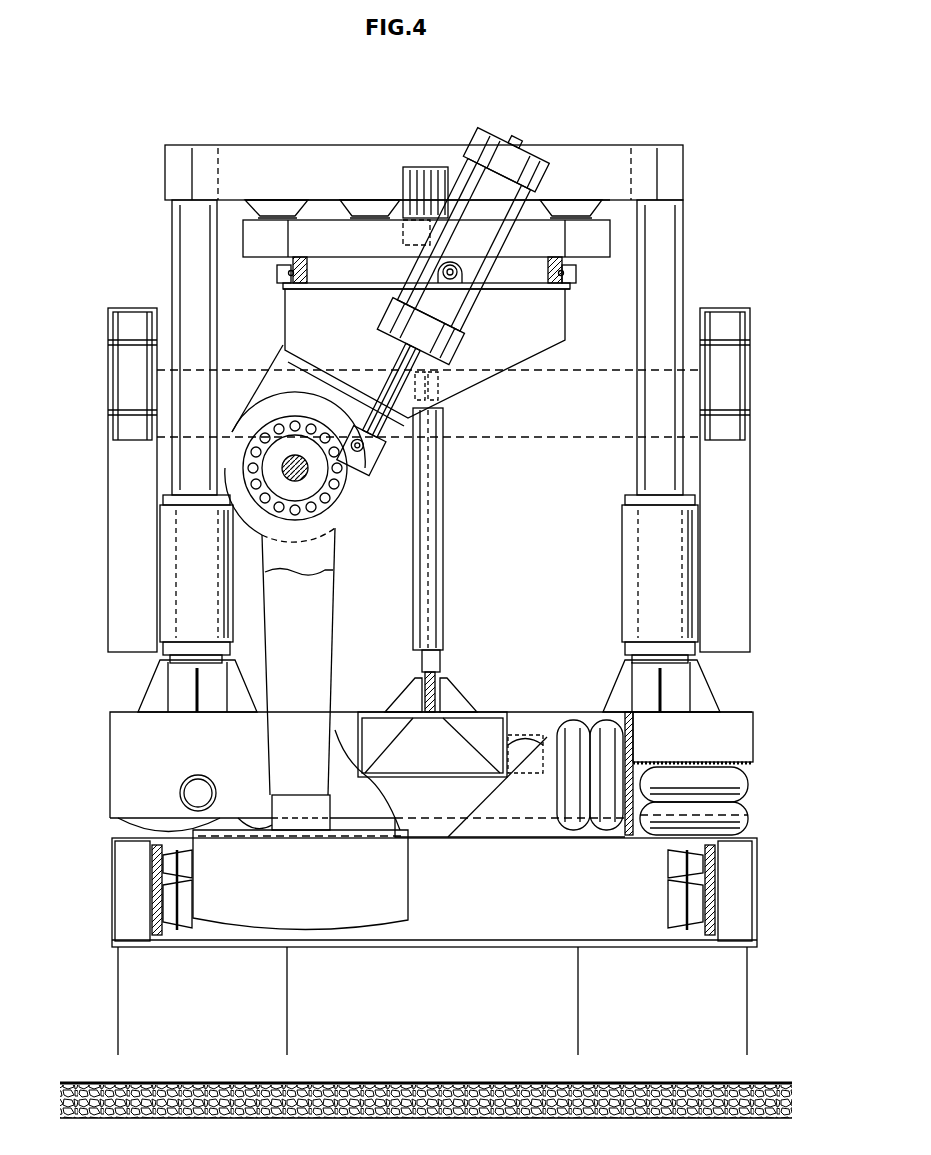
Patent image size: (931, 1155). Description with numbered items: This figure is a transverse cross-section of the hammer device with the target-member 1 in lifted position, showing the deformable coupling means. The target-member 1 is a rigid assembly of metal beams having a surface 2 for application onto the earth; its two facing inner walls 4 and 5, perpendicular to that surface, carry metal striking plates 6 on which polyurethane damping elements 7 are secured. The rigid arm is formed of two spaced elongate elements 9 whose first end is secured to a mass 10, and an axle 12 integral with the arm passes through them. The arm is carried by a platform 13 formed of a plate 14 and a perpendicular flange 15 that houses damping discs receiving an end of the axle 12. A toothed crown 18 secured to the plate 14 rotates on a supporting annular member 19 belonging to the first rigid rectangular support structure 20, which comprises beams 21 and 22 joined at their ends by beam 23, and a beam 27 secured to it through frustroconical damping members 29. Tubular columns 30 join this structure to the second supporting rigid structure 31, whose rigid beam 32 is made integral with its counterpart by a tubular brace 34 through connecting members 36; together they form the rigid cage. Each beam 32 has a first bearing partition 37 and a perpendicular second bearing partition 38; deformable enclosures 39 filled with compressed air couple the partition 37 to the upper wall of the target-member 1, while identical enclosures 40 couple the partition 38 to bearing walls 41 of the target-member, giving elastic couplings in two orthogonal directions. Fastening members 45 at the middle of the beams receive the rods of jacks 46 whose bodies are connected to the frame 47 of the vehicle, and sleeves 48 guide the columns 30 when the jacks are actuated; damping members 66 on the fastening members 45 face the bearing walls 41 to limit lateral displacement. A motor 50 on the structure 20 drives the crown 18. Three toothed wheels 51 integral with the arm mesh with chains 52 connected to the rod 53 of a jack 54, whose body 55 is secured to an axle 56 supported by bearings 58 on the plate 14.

The target-member 1 is at (88, 945).
The surface for application onto the earth 2 is at (405, 948).
The inner wall 4 is at (735, 895).
The inner wall 5 is at (128, 857).
The striking plate 6 is at (158, 938).
The damping element 7 is at (183, 930).
The elongate element 9 is at (328, 612).
The mass 10 is at (400, 845).
The axle 12 is at (292, 455).
The platform 13 is at (503, 405).
The plate 14 is at (292, 290).
The flange 15 is at (345, 522).
The toothed crown 18 is at (575, 282).
The supporting annular member 19 is at (548, 292).
The first rigid rectangular support structure 20 is at (250, 130).
The beam 21 is at (288, 242).
The beam 22 is at (568, 235).
The beam 23 is at (598, 225).
The beam 27 is at (372, 175).
The frustroconical member 29 is at (352, 200).
The tubular column 30 is at (180, 226).
The second supporting rigid structure 31 is at (82, 705).
The rigid beam 32 is at (122, 748).
The tubular brace 34 is at (183, 790).
The connecting member 36 is at (625, 676).
The first bearing partition 37 is at (690, 762).
The second bearing partition 38 is at (635, 735).
The deformable enclosure 39 is at (748, 793).
The deformable enclosure 40 is at (600, 735).
The bearing wall 41 is at (480, 826).
The fastening member 45 is at (415, 687).
The jack 46 is at (410, 565).
The frame 47 is at (128, 306).
The sleeve 48 is at (630, 578).
The motor 50 is at (423, 167).
The toothed wheel 51 is at (344, 460).
The chain 52 is at (338, 486).
The rod 53 is at (400, 360).
The jack 54 is at (500, 110).
The body 55 is at (517, 137).
The axle 56 is at (455, 265).
The bearing 58 is at (455, 282).
The damping member 66 is at (525, 735).